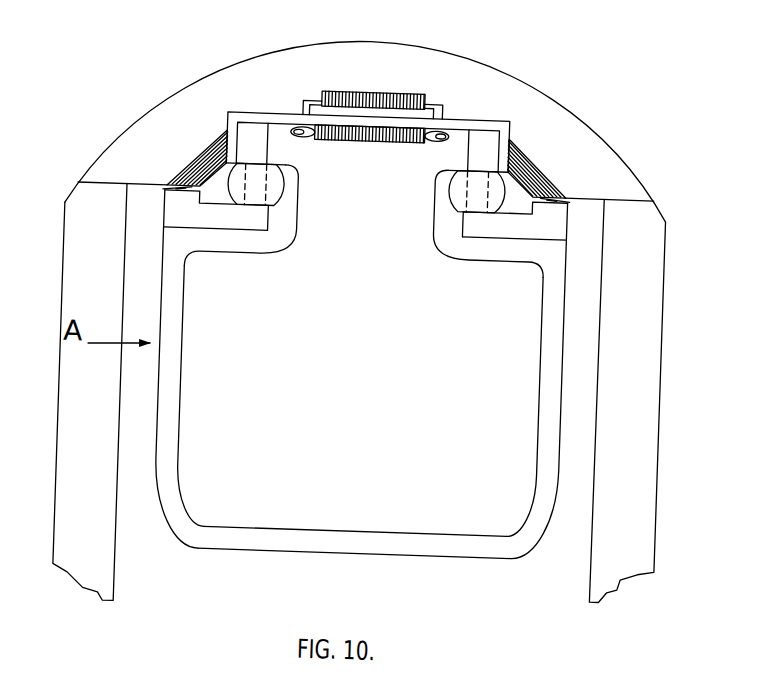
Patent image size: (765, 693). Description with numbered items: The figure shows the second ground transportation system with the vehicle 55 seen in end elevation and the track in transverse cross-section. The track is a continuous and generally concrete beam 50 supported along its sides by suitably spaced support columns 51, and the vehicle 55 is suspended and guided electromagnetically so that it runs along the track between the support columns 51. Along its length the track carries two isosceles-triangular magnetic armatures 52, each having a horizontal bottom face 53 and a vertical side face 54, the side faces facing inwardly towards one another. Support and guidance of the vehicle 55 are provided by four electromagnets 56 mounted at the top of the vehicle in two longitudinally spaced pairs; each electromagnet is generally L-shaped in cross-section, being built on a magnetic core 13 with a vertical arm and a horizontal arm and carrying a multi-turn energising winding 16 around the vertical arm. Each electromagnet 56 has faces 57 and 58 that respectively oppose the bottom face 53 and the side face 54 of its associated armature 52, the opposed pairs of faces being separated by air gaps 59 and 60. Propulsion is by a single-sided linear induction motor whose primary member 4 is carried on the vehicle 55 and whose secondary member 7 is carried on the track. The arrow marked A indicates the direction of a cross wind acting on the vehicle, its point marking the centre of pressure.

The primary member 4 is at (351, 117).
The secondary member 7 is at (379, 82).
The magnetic core 13 is at (221, 217).
The energising winding 16 is at (273, 186).
The beam 50 is at (248, 88).
The support columns 51 is at (81, 368).
The magnetic armatures 52 is at (194, 153).
The horizontal bottom faces 53 is at (181, 185).
The vertical side faces 54 is at (243, 132).
The vehicle 55 is at (352, 547).
The electromagnets 56 is at (264, 230).
The electromagnet face 57 is at (182, 183).
The electromagnet face 58 is at (493, 118).
The air gap 59 is at (162, 186).
The air gap 60 is at (518, 45).